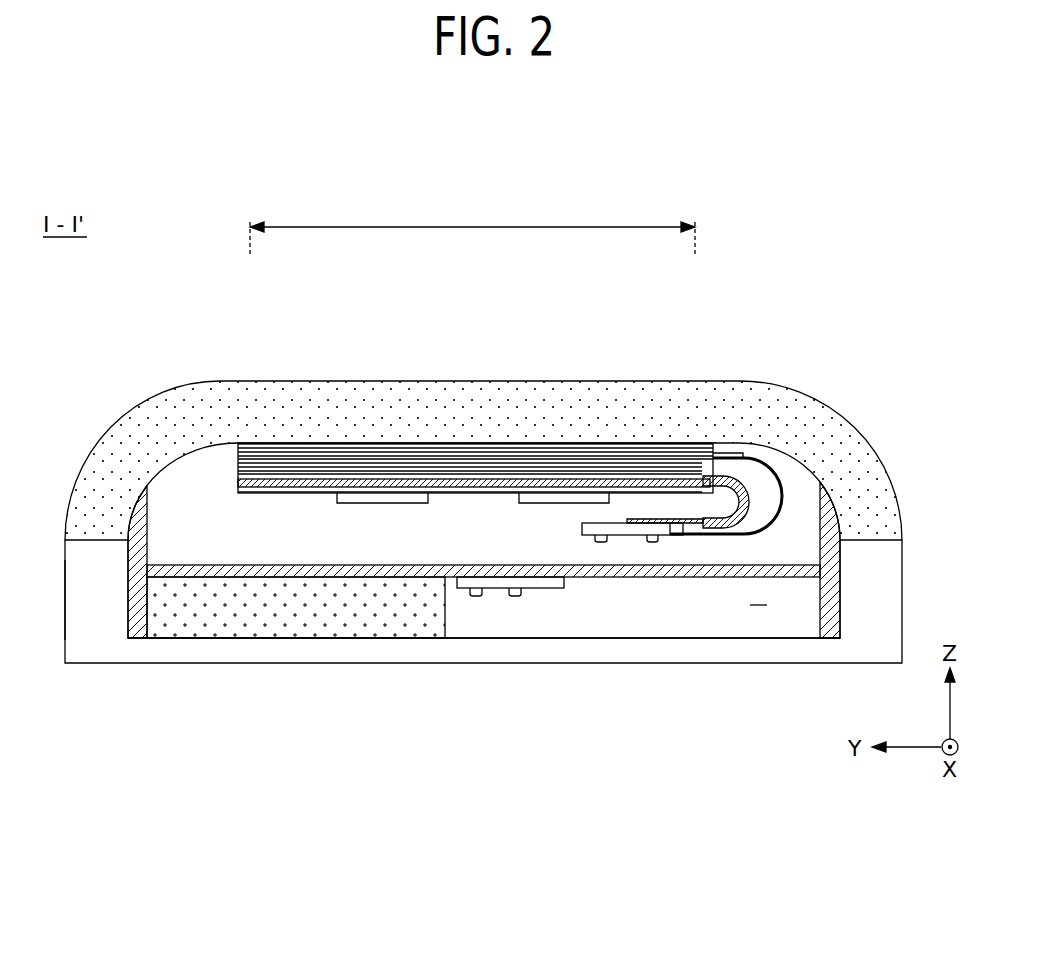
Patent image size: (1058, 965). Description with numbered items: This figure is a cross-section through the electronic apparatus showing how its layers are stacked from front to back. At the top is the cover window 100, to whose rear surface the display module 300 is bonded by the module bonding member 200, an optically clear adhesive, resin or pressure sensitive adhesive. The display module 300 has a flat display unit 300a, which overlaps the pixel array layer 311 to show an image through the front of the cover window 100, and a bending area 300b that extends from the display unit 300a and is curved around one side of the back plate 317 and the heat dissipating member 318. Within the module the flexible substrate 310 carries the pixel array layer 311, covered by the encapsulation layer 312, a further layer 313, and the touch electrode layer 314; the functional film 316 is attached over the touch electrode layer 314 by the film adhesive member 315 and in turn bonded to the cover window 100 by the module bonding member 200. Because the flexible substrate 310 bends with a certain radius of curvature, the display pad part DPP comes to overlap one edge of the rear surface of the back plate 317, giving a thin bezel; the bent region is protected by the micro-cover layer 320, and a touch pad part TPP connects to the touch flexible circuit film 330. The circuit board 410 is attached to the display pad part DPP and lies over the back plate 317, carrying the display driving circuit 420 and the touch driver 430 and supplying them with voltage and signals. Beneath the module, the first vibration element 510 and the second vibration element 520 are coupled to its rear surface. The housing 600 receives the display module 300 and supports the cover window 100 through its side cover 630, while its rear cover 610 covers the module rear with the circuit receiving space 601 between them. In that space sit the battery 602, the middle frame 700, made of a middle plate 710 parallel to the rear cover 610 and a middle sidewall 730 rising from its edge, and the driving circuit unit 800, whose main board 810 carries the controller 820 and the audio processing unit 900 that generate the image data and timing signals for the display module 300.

The cover window 100 is at (843, 447).
The module bonding member 200 is at (342, 443).
The display module 300 is at (528, 389).
The display unit 300a is at (472, 226).
The bending area 300b is at (732, 387).
The flexible substrate 310 is at (582, 473).
The pixel array layer 311 is at (562, 469).
The encapsulation layer 312 is at (533, 465).
The layer of display module 313 is at (512, 461).
The touch electrode layer 314 is at (483, 458).
The film adhesive member 315 is at (460, 454).
The functional film 316 is at (415, 450).
The back plate 317 is at (633, 485).
The heat dissipating member 318 is at (613, 478).
The display pad part DPP is at (655, 517).
The touch pad part TPP is at (717, 480).
The micro-cover layer 320 is at (762, 456).
The touch flexible circuit film 330 is at (783, 492).
The circuit board 410 is at (627, 537).
The display driving circuit 420 is at (653, 543).
The touch driver 430 is at (601, 543).
The first vibration element 510 is at (386, 504).
The second vibration element 520 is at (545, 504).
The housing 600 is at (137, 742).
The circuit receiving space 601 is at (757, 607).
The battery 602 is at (298, 613).
The rear cover 610 is at (155, 652).
The side cover 630 is at (62, 622).
The middle frame 700 is at (484, 631).
The middle plate 710 is at (237, 570).
The middle sidewall 730 is at (143, 597).
The driving circuit unit 800 is at (527, 679).
The main board 810 is at (553, 583).
The controller 820 is at (515, 597).
The audio processing unit 900 is at (475, 597).